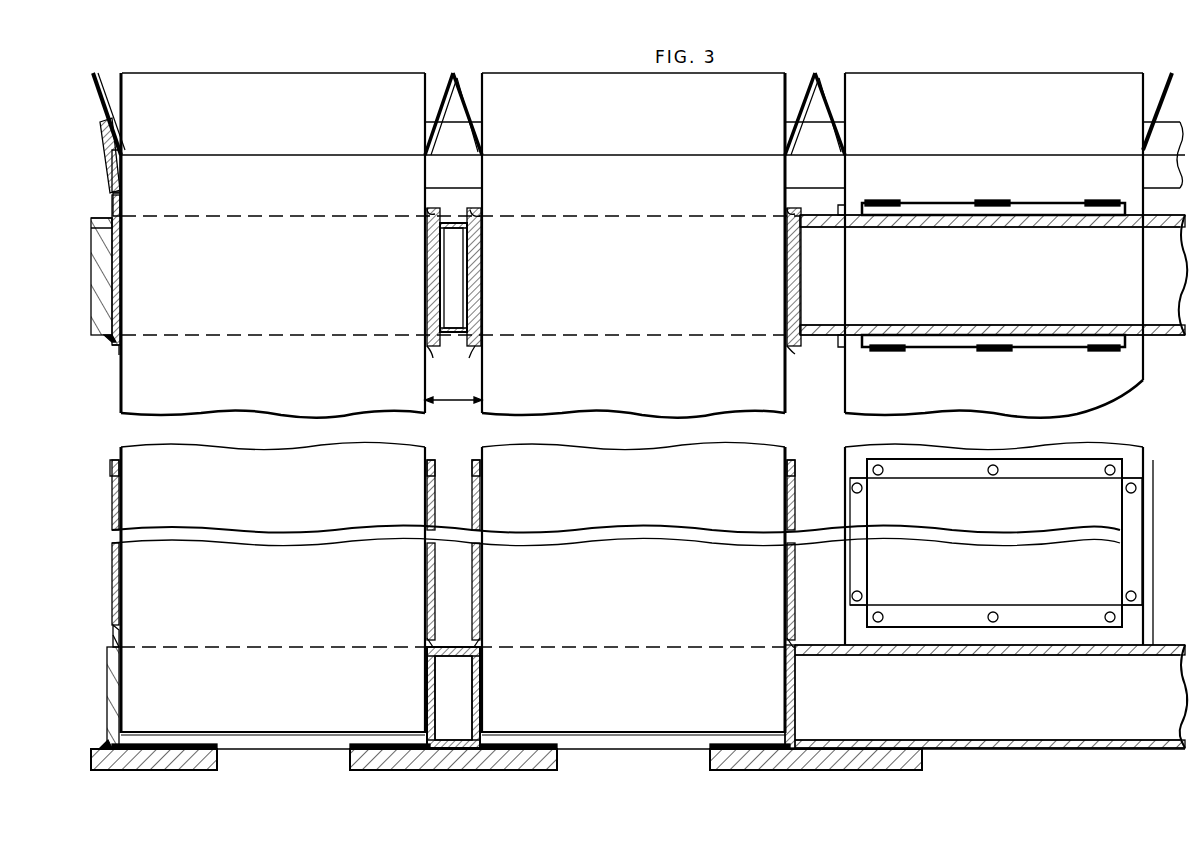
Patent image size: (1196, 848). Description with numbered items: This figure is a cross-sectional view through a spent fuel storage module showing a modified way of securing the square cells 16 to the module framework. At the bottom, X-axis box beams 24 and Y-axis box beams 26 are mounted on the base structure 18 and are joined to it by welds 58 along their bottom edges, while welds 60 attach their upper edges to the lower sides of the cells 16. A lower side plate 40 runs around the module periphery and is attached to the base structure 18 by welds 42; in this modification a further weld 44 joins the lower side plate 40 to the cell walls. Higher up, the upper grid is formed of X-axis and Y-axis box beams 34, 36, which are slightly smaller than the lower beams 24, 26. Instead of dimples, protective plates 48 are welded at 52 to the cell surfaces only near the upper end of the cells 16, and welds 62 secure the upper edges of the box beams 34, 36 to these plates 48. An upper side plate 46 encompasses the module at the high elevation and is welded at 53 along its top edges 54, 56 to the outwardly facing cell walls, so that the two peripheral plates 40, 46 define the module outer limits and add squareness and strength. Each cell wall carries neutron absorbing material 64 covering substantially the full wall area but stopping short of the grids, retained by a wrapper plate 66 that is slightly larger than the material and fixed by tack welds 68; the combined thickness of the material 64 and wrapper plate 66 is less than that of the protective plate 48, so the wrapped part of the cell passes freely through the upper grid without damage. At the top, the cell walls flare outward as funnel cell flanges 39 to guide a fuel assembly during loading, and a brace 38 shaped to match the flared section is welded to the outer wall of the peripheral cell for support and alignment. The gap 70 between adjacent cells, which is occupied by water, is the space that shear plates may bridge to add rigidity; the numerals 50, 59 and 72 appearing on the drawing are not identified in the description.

The cell 16 is at (121, 410).
The base structure 18 is at (208, 765).
The X-axis box beam 24 is at (822, 656).
The Y-axis box beam 26 is at (426, 672).
The upper X-axis box beam 34 is at (824, 328).
The upper Y-axis box beam 36 is at (468, 284).
The brace 38 is at (108, 120).
The funnel cell flange 39 is at (105, 82).
The lower side plate 40 is at (108, 682).
The weld 42 is at (104, 748).
The weld 44 is at (118, 640).
The upper side plate 46 is at (104, 270).
The protective plate 48 is at (120, 286).
The spacer 50 is at (116, 188).
The weld 52 is at (116, 350).
The weld 53 is at (112, 210).
The top edge 54 is at (108, 220).
The top edge 56 is at (108, 336).
The weld 58 is at (380, 744).
The bracket 59 is at (888, 204).
The weld 60 is at (430, 640).
The weld 62 is at (472, 212).
The neutron absorbing material 64 is at (120, 496).
The wrapper plate 66 is at (112, 472).
The tack weld 68 is at (854, 486).
The gap 70 is at (452, 400).
The base plate 72 is at (552, 765).